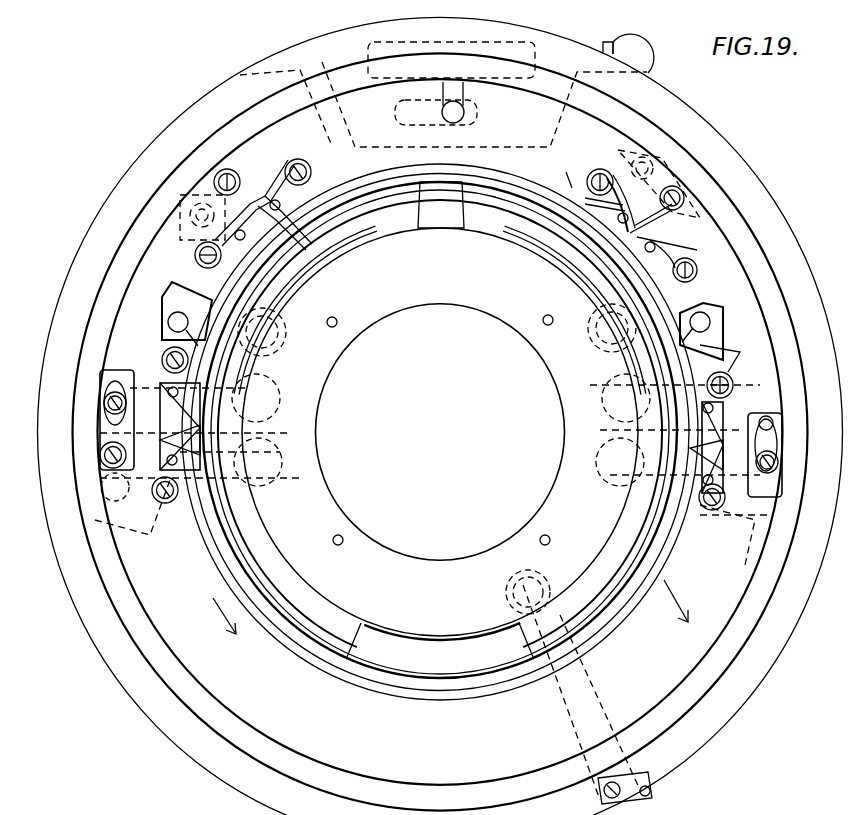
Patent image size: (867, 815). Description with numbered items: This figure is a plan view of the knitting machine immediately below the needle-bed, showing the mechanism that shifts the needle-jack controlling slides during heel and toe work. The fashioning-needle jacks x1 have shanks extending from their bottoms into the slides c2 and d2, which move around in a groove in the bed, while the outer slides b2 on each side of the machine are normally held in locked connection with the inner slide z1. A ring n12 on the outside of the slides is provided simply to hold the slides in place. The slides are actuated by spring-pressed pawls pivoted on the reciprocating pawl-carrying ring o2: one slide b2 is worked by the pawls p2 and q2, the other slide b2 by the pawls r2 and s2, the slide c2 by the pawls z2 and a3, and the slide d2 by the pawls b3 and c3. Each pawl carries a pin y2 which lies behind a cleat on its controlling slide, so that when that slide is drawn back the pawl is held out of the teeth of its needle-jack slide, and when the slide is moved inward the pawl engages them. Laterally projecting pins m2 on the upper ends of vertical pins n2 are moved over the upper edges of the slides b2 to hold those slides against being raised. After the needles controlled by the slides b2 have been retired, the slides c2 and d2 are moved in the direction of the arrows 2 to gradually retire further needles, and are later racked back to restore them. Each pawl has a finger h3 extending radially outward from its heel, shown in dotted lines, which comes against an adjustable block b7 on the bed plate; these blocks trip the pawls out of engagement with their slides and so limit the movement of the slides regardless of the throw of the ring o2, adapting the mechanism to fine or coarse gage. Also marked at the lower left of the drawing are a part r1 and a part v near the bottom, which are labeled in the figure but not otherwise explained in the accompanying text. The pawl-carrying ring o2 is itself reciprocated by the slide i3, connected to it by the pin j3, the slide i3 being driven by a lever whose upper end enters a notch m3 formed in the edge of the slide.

The pawl-carrying ring o2 is at (440, 416).
The ring n12 is at (494, 168).
The slides b2 is at (380, 178).
The pawl r2 is at (568, 169).
The slide c2 is at (220, 416).
The pin y2 is at (385, 236).
The jacks x1 is at (400, 185).
The slide d2 is at (632, 422).
The pin j3 is at (455, 112).
The finger h3 is at (345, 105).
The notch m3 is at (609, 42).
The slide i3 is at (648, 52).
The pawl p2 is at (262, 185).
The pawl q2 is at (196, 257).
The pawl s2 is at (668, 250).
The vertical pins n2 is at (168, 322).
The laterally projecting pins m2 is at (730, 352).
The pawl z2 is at (160, 420).
The pawl a3 is at (168, 452).
The pawl b3 is at (723, 422).
The pawl c3 is at (720, 450).
The adjustable block b7 is at (108, 404).
The hole r1 is at (102, 492).
The inner slide z1 is at (600, 790).
The pin v is at (649, 793).
The arrows 2 is at (450, 611).